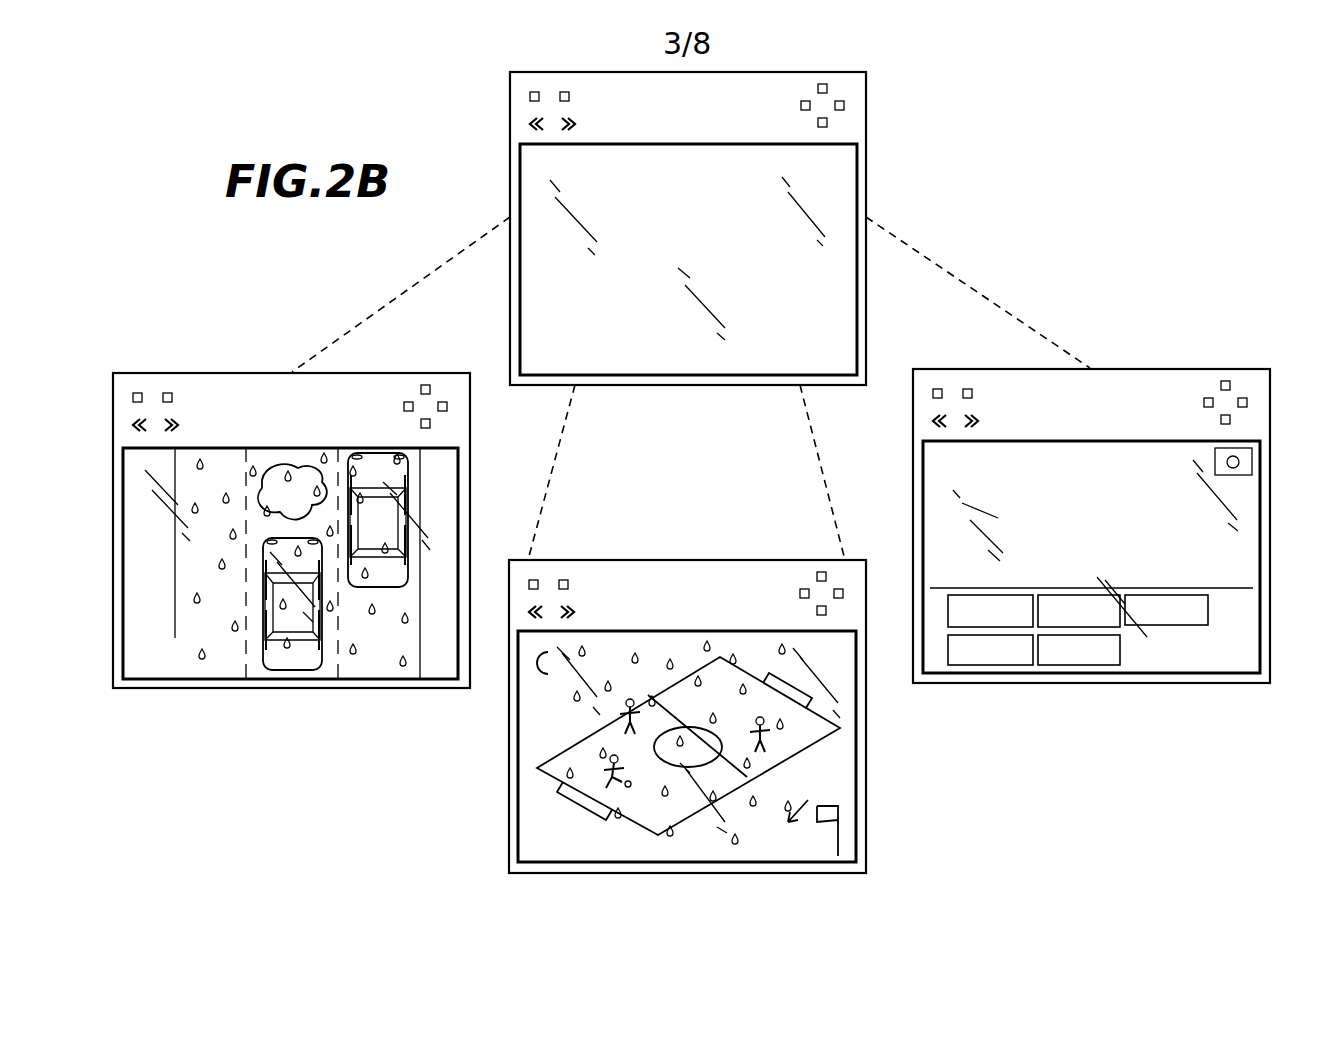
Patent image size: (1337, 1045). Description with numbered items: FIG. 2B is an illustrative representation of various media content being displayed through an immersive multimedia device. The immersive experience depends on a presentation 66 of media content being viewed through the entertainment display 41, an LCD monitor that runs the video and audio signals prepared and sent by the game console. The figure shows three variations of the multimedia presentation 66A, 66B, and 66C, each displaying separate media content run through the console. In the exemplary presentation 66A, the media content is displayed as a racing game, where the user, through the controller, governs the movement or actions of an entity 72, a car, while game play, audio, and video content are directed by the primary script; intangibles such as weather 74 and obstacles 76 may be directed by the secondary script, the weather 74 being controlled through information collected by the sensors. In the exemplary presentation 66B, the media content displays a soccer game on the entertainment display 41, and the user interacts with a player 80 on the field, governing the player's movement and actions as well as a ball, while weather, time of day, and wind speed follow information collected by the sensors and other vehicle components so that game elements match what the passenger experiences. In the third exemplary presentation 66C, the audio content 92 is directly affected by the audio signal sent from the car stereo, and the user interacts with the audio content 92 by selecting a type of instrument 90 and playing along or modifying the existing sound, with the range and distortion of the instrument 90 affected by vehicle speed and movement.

The entertainment display 41 is at (790, 54).
The presentation 66 is at (612, 191).
The exemplary presentation 66A is at (186, 670).
The exemplary presentation 66B is at (587, 851).
The exemplary presentation 66C is at (995, 480).
The entity 72 is at (300, 663).
The weather 74 is at (238, 618).
The obstacles 76 is at (283, 468).
The player 80 is at (606, 769).
The instrument 90 is at (1073, 664).
The audio content 92 is at (968, 496).